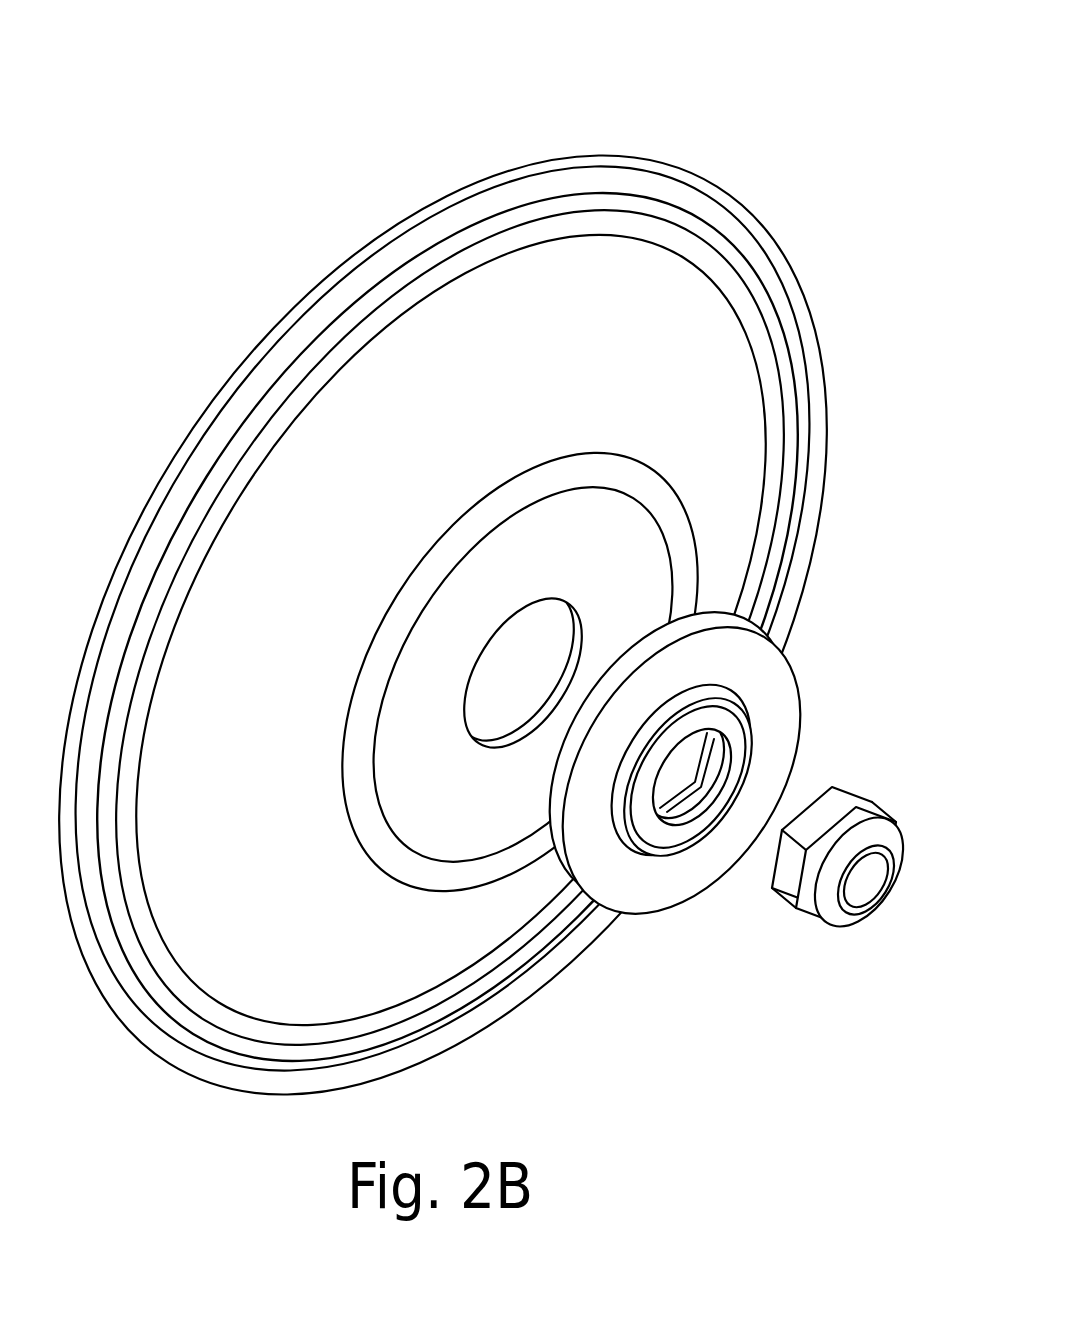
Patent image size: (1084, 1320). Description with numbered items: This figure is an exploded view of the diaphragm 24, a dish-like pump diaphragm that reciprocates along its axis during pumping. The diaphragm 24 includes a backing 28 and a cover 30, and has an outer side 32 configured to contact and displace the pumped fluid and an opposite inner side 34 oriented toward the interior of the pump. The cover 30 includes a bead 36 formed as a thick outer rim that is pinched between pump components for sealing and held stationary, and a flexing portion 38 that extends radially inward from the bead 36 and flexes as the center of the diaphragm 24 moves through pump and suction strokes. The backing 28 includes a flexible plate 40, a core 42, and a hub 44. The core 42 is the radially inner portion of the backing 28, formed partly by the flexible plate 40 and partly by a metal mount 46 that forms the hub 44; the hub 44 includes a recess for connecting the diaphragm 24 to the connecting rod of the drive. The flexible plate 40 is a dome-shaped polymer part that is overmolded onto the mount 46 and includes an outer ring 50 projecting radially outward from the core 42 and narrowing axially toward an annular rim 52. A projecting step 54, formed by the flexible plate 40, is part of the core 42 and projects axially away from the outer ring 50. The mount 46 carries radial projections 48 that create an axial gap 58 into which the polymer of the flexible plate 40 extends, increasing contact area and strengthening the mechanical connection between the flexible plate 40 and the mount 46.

The diaphragm 24 is at (493, 621).
The backing 28 is at (721, 813).
The cover 30 is at (493, 621).
The outer side 32 is at (318, 289).
The inner side 34 is at (452, 318).
The bead 36 is at (643, 186).
The flexing portion 38 is at (746, 469).
The flexible plate 40 is at (680, 805).
The core 42 is at (669, 867).
The hub 44 is at (871, 917).
The mount 46 is at (857, 837).
The projections 48 is at (862, 805).
The outer ring 50 is at (712, 853).
The annular rim 52 is at (577, 892).
The projecting step 54 is at (716, 810).
The axial gap 58 is at (822, 808).